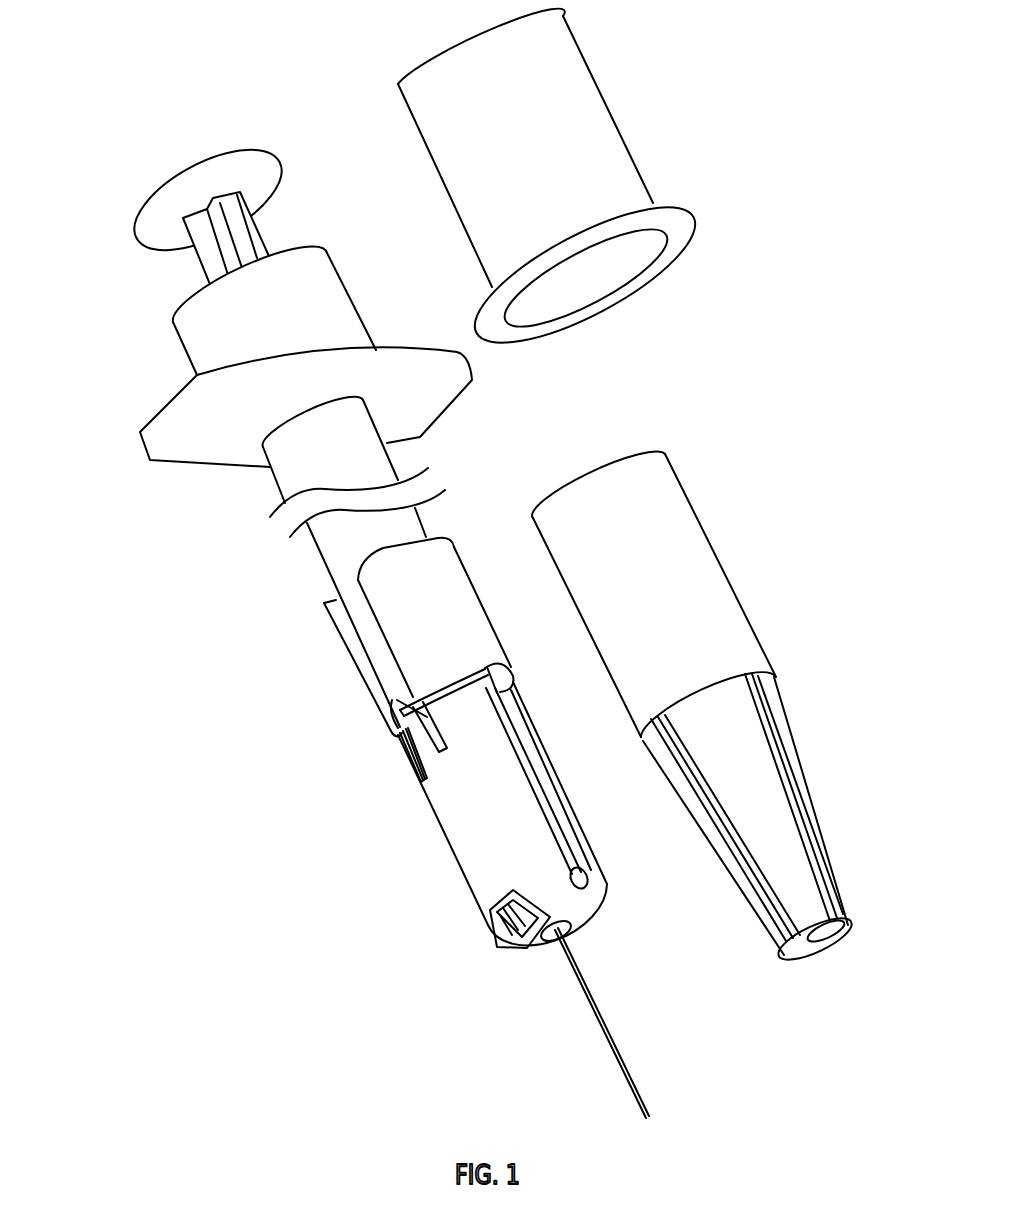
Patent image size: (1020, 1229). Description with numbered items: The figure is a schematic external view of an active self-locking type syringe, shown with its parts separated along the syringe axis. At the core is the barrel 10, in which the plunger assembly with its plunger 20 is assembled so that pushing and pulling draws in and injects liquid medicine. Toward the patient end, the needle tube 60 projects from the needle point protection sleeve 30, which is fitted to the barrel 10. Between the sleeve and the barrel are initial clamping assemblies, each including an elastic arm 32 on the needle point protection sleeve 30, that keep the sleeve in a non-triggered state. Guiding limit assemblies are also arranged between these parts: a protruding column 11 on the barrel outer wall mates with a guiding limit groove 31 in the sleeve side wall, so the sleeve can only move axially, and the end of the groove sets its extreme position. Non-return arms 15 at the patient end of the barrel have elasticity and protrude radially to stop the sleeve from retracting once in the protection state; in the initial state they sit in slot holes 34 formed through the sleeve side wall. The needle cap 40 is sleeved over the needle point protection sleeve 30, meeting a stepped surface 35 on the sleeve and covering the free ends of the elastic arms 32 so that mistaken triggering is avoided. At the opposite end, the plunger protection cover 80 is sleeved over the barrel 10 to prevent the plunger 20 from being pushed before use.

The barrel 10 is at (330, 547).
The protruding column 11 is at (593, 877).
The non-return arm 15 is at (507, 917).
The plunger 20 is at (207, 245).
The needle point protection sleeve 30 is at (472, 787).
The guiding limit groove 31 is at (557, 838).
The elastic arm 32 is at (418, 735).
The slot hole 34 is at (503, 950).
The stepped surface 35 is at (507, 687).
The needle cap 40 is at (680, 583).
The needle tube 60 is at (580, 983).
The plunger protection cover 80 is at (557, 135).